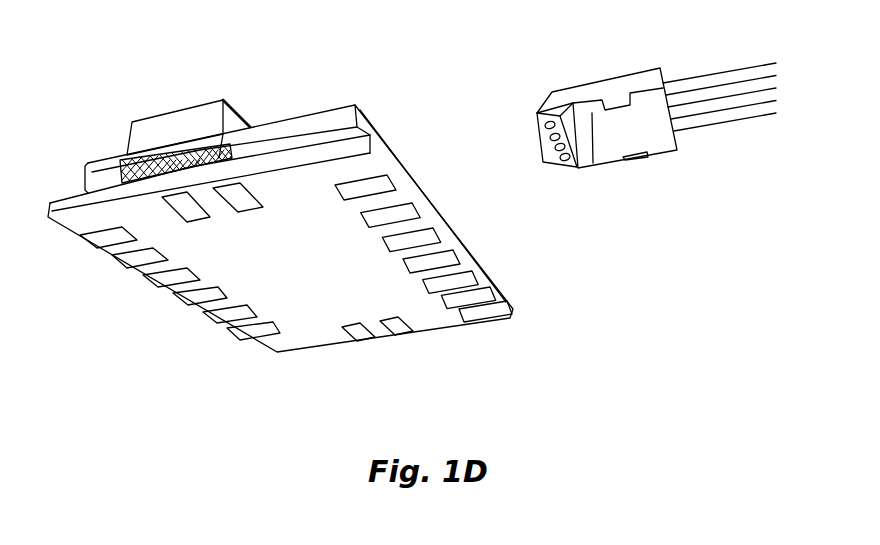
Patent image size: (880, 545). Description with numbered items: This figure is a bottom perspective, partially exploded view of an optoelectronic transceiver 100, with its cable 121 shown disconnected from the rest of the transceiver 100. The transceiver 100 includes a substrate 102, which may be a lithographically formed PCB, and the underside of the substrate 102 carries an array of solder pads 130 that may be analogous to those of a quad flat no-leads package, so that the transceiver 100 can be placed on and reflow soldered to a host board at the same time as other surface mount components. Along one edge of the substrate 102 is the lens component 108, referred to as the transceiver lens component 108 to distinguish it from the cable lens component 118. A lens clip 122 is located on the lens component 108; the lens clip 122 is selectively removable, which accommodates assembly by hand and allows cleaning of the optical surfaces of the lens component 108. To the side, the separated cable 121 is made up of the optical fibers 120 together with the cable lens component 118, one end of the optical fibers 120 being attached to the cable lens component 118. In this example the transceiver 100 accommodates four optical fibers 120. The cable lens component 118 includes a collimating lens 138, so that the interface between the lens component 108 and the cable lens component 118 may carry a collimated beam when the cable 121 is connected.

The optoelectronic transceiver 100 is at (178, 47).
The substrate 102 is at (328, 340).
The lens component 108 is at (311, 122).
The cable lens component 118 is at (620, 87).
The optical fibers 120 is at (705, 127).
The cable 121 is at (653, 32).
The lens clip 122 is at (148, 120).
The solder pads 130 is at (482, 312).
The collimating lens 138 is at (565, 166).